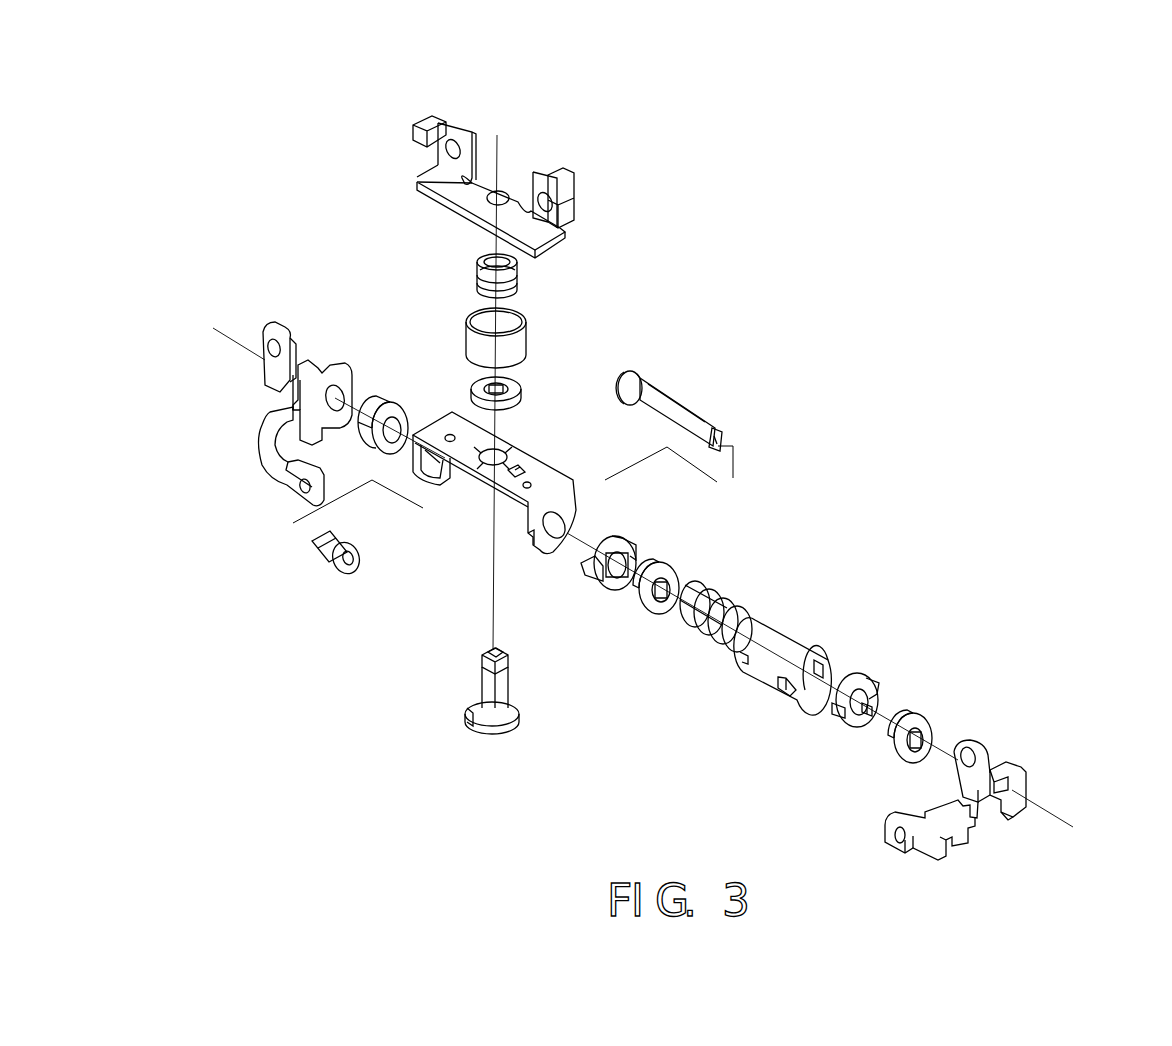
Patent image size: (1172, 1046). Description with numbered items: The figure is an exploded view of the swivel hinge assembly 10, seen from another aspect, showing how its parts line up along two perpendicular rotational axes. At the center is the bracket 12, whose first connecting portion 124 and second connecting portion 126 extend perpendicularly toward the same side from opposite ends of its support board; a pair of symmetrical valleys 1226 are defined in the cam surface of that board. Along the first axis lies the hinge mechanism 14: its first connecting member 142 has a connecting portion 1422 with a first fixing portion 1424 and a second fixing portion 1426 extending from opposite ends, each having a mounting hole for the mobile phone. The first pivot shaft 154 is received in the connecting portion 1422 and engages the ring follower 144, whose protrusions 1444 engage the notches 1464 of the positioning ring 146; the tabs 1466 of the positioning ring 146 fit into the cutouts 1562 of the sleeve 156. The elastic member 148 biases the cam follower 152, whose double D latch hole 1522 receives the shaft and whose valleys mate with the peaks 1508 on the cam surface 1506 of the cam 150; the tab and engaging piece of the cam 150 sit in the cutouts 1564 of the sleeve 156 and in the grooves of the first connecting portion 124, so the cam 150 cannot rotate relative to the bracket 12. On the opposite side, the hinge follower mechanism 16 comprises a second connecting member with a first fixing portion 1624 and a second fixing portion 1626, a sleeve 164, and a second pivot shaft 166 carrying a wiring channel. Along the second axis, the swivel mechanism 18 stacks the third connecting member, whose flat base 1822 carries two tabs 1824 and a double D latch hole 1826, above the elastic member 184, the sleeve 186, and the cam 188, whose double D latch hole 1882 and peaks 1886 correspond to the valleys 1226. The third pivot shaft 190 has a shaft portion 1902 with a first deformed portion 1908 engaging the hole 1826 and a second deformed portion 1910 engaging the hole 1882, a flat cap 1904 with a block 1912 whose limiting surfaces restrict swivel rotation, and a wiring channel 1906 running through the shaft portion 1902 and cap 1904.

The swivel hinge assembly 10 is at (274, 152).
The bracket 12 is at (528, 470).
The first connecting portion 124 is at (574, 527).
The second connecting portion 126 is at (424, 472).
The valleys 1226 is at (511, 460).
The hinge mechanism 14 is at (1001, 625).
The first connecting member 142 is at (1033, 746).
The connecting portion 1422 is at (1005, 817).
The first fixing portion 1424 is at (972, 736).
The second fixing portion 1426 is at (918, 843).
The ring follower 144 is at (931, 706).
The protrusions 1444 is at (893, 745).
The positioning ring 146 is at (883, 663).
The notches 1464 is at (870, 721).
The tabs 1466 is at (838, 716).
The elastic member 148 is at (704, 606).
The cam 150 is at (630, 530).
The cam surface 1506 is at (627, 556).
The peaks 1508 is at (621, 587).
The cam follower 152 is at (690, 570).
The double D latch hole 1522 is at (663, 601).
The first pivot shaft 154 is at (689, 385).
The sleeve 156 is at (801, 620).
The cutouts 1562 is at (779, 690).
The cutouts 1564 is at (738, 660).
The hinge follower mechanism 16 is at (246, 403).
The first fixing portion 1624 is at (281, 326).
The second fixing portion 1626 is at (286, 480).
The sleeve 164 is at (381, 405).
The second pivot shaft 166 is at (291, 548).
The swivel mechanism 18 is at (601, 254).
The flat base 1822 is at (470, 196).
The tabs 1824 is at (447, 126).
The double D latch hole 1826 is at (500, 192).
The elastic member 184 is at (471, 268).
The sleeve 186 is at (520, 340).
The cam 188 is at (524, 378).
The double D latch hole 1882 is at (482, 387).
The peaks 1886 is at (490, 412).
The third pivot shaft 190 is at (452, 710).
The shaft portion 1902 is at (593, 660).
The cap 1904 is at (512, 720).
The wiring channel 1906 is at (488, 655).
The first deformed portion 1908 is at (507, 661).
The second deformed portion 1910 is at (506, 694).
The block 1912 is at (476, 728).